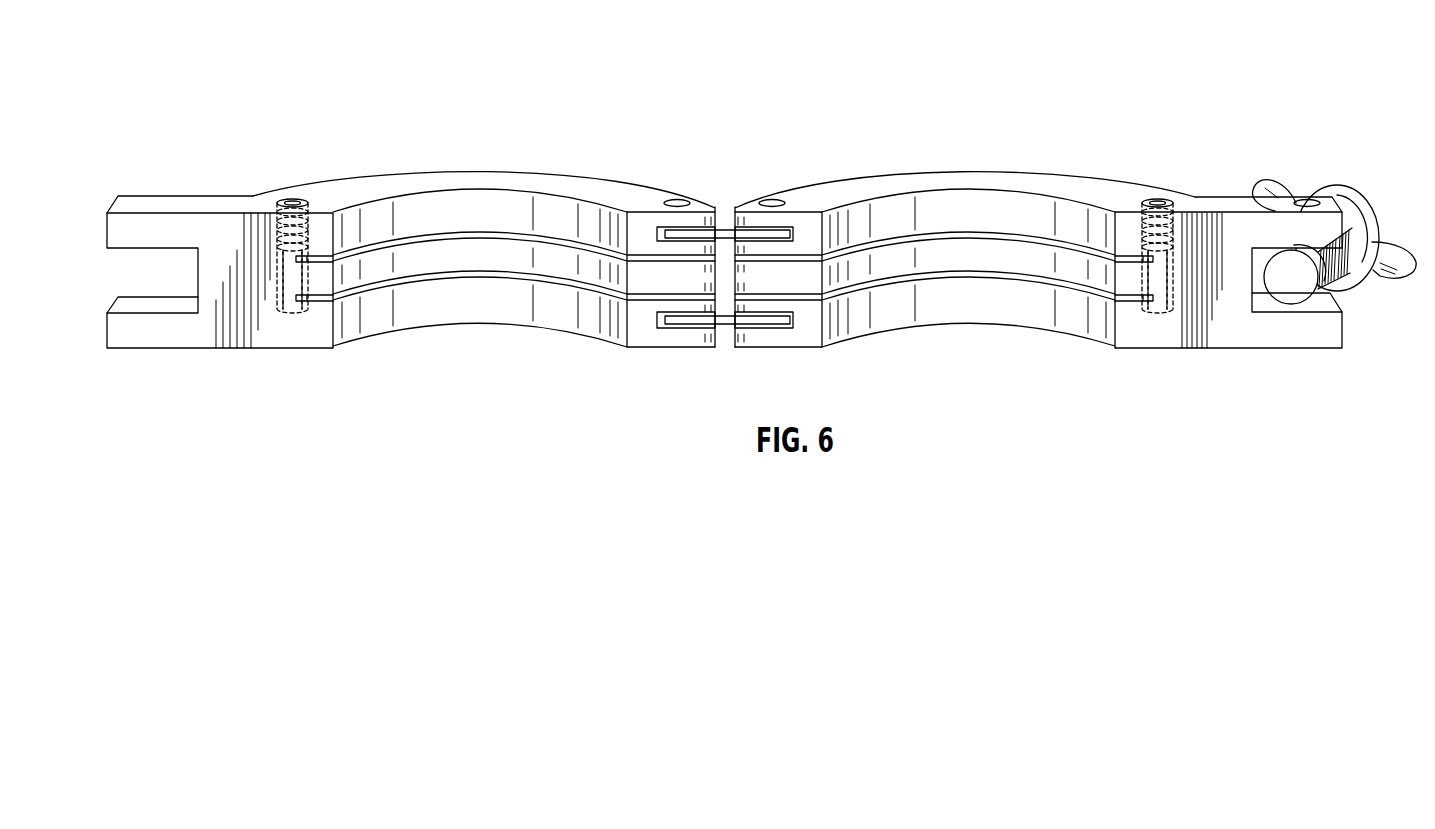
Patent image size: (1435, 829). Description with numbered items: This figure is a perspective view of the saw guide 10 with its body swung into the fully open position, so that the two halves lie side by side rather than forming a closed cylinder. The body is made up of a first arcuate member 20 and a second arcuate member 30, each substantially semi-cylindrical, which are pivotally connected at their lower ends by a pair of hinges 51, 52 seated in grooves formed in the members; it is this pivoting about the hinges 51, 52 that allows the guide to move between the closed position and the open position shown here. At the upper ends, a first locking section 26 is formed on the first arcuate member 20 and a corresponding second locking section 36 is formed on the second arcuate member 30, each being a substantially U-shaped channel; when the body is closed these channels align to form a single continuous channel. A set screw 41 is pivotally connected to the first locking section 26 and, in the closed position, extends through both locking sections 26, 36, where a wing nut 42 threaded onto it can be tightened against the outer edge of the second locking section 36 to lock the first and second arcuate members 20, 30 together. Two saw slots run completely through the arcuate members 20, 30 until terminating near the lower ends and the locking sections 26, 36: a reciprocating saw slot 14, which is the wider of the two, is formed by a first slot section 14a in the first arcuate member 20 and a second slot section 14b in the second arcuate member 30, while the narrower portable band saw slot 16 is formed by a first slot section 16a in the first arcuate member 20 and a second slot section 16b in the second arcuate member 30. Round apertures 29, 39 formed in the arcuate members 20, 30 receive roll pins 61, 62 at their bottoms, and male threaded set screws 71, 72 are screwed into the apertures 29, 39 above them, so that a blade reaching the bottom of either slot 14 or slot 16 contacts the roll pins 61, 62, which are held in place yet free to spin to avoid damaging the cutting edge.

The saw guide 10 is at (291, 108).
The reciprocating saw slot 14 is at (517, 236).
The first slot section 14a is at (862, 247).
The second slot section 14b is at (455, 238).
The portable band saw slot 16 is at (1015, 283).
The first slot section 16a is at (918, 272).
The second slot section 16b is at (458, 273).
The first arcuate member 20 is at (965, 182).
The first locking section 26 is at (1282, 229).
The round aperture 29 is at (1150, 314).
The second arcuate member 30 is at (370, 186).
The second locking section 36 is at (156, 225).
The round aperture 39 is at (305, 314).
The set screw 41 is at (1297, 275).
The wing nut 42 is at (1387, 250).
The hinge 51 is at (723, 230).
The hinge 52 is at (721, 326).
The roll pin 61 is at (1162, 314).
The roll pin 62 is at (292, 316).
The set screw 71 is at (1148, 208).
The set screw 72 is at (265, 220).